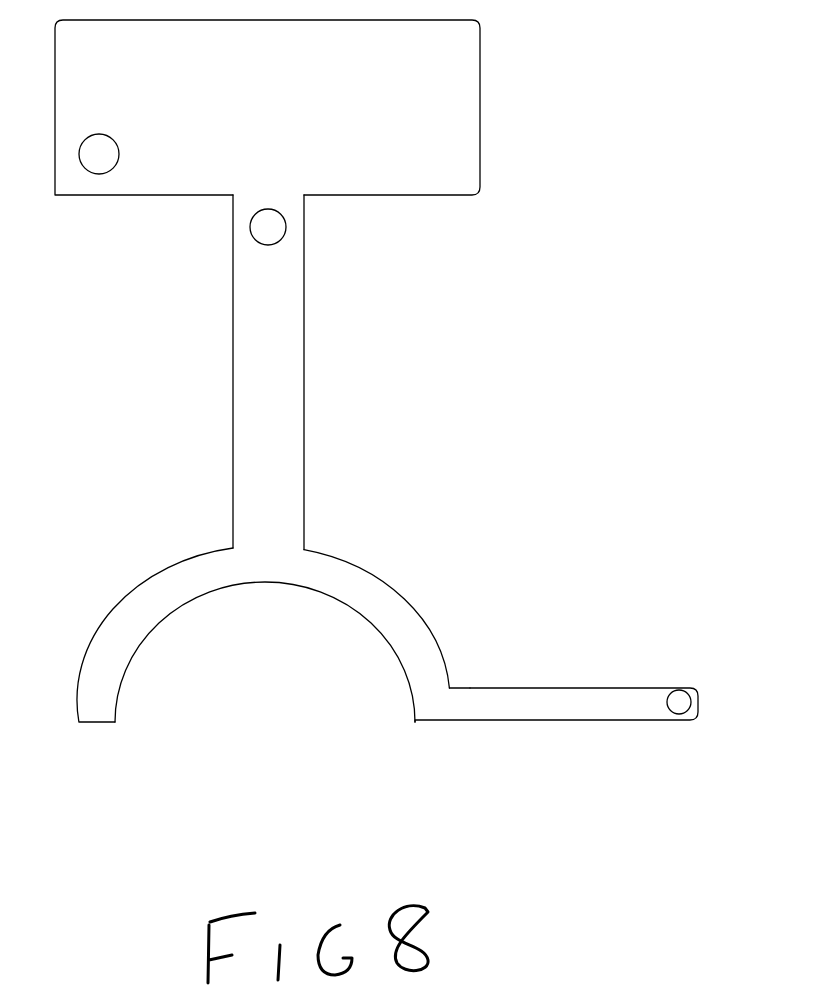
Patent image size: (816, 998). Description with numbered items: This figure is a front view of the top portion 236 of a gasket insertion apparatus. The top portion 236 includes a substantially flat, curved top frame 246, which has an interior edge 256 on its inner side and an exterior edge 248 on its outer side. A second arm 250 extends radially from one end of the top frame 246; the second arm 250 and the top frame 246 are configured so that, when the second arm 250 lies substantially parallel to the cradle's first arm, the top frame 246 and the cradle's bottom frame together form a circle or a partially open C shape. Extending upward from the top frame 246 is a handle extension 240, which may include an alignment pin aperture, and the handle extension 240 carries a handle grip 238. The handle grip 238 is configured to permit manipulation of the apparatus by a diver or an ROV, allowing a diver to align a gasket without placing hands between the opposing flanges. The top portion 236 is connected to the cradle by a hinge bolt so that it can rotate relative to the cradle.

The top portion 236 is at (376, 412).
The handle grip 238 is at (462, 137).
The handle extension 240 is at (287, 383).
The top frame 246 is at (387, 607).
The exterior edge 248 is at (445, 657).
The second arm 250 is at (586, 713).
The interior edge 256 is at (388, 647).